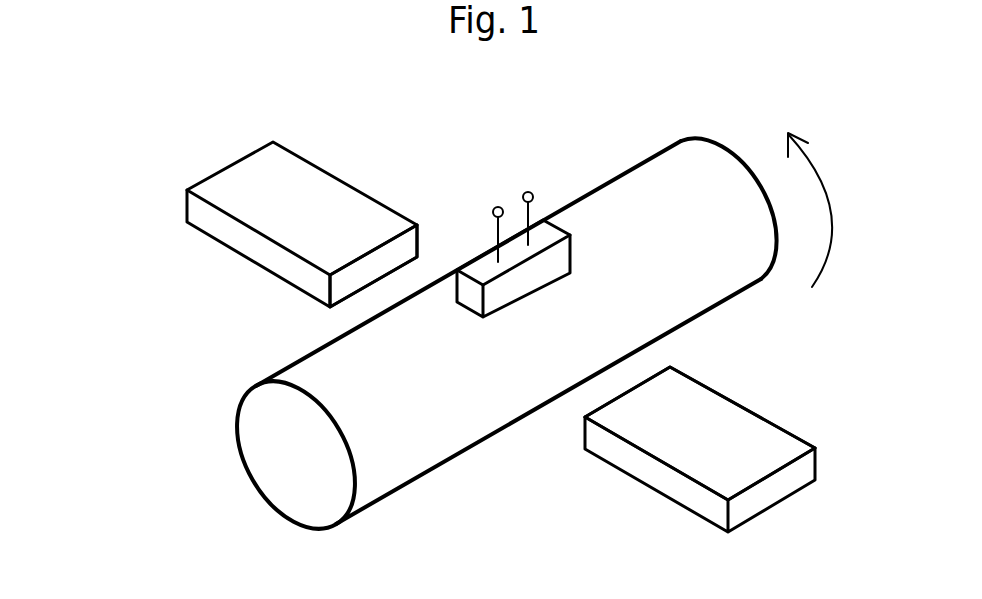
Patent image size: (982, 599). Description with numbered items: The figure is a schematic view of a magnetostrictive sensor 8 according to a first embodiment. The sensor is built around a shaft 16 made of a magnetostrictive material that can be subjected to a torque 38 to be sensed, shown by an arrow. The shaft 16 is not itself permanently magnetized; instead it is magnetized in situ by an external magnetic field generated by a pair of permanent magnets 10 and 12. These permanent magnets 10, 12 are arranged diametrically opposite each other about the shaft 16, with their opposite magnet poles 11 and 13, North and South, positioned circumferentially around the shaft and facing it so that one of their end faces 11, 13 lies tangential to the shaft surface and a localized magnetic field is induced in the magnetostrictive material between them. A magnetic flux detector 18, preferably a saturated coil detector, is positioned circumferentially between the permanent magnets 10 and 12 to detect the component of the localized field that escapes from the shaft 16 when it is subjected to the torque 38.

The magnetostrictive sensor 8 is at (137, 160).
The permanent magnet 10 is at (268, 250).
The magnet pole 11 is at (393, 257).
The permanent magnet 12 is at (670, 482).
The magnet pole 13 is at (628, 388).
The shaft 16 is at (323, 387).
The magnetic flux detector 18 is at (467, 303).
The torque 38 is at (831, 210).